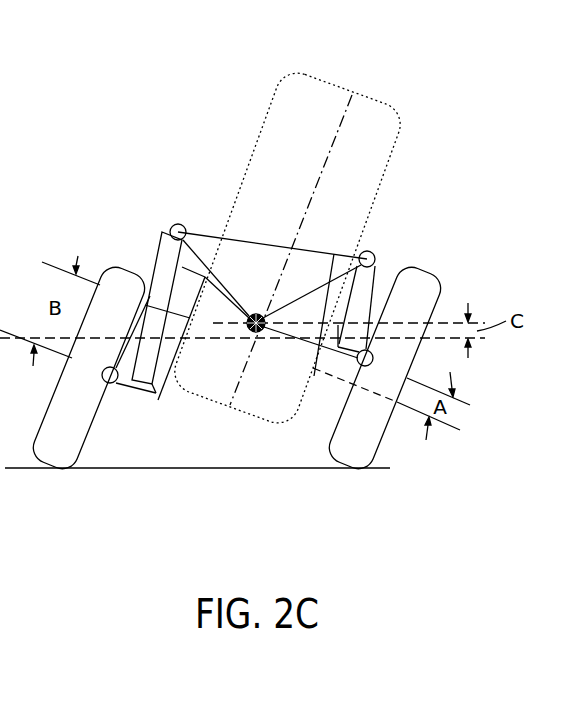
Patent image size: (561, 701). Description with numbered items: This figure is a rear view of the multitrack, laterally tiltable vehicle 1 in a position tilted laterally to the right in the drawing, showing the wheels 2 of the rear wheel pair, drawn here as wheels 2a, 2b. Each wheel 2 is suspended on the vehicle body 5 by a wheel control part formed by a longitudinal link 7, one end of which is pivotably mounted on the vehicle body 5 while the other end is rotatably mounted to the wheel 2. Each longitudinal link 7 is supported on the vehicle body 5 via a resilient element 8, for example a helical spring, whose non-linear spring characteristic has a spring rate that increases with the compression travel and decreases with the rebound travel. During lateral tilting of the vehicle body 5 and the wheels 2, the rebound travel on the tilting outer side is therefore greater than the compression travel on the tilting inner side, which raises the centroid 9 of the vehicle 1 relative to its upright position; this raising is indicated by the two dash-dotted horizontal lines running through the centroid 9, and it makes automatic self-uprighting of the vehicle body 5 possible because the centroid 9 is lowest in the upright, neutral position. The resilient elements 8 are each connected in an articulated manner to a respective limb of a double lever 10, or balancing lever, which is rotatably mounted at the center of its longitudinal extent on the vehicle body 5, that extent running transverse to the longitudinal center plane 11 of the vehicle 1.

The vehicle 1 is at (220, 58).
The wheel 2 is at (230, 399).
The first wheel 2a is at (338, 476).
The second wheel 2b is at (50, 473).
The vehicle body 5 is at (268, 136).
The longitudinal link 7 is at (150, 396).
The resilient element 8 is at (163, 246).
The centroid 9 is at (257, 313).
The double lever 10 is at (323, 265).
The longitudinal center plane 11 is at (345, 116).